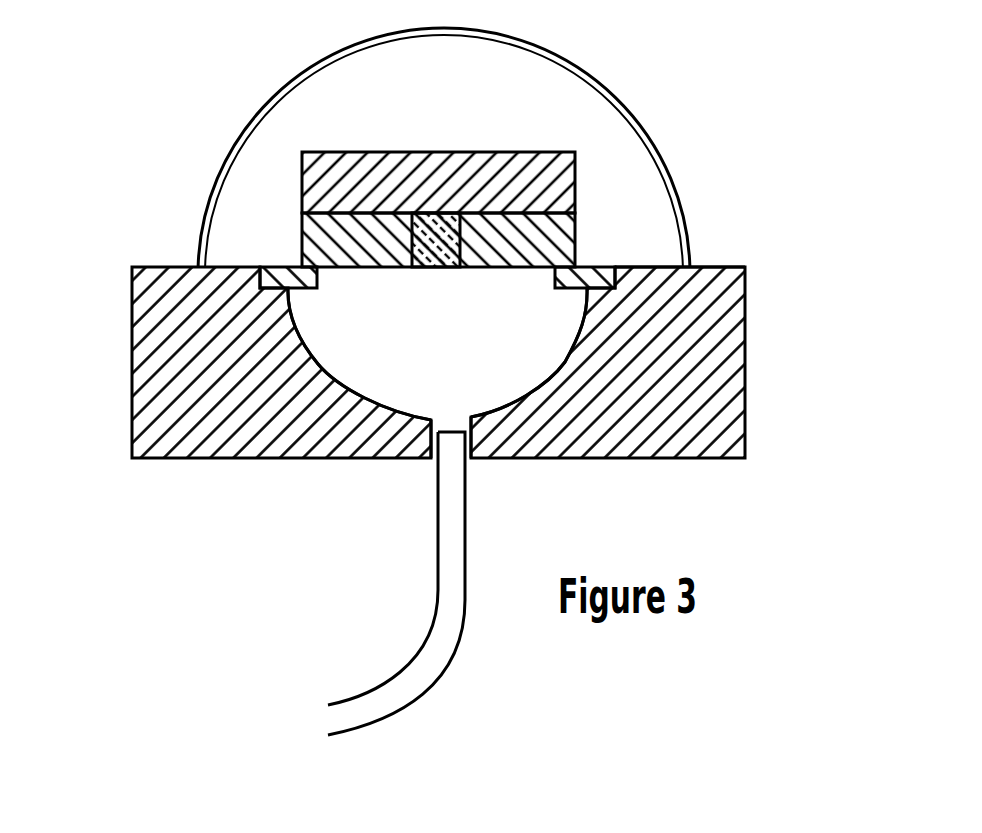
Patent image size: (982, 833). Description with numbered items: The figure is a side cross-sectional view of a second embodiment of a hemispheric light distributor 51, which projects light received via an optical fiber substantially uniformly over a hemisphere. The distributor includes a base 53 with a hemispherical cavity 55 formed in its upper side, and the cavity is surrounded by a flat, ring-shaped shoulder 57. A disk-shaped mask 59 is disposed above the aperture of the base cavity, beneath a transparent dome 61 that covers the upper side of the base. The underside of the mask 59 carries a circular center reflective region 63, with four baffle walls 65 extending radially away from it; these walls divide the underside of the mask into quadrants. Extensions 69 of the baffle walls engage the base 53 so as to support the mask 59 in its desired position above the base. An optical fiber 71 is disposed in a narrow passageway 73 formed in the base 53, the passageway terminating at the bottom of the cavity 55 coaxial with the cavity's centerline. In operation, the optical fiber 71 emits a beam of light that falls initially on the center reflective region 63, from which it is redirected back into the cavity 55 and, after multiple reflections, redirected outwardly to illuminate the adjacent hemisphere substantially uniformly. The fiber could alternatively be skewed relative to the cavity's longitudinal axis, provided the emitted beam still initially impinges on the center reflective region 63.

The hemispheric light distributor 51 is at (116, 155).
The base 53 is at (717, 355).
The hemispherical cavity 55 is at (477, 352).
The shoulder 57 is at (722, 265).
The mask 59 is at (520, 167).
The transparent dome 61 is at (630, 107).
The center reflective region 63 is at (438, 270).
The baffle walls 65 is at (317, 240).
The extensions 69 is at (270, 270).
The optical fiber 71 is at (450, 540).
The passageway 73 is at (434, 422).